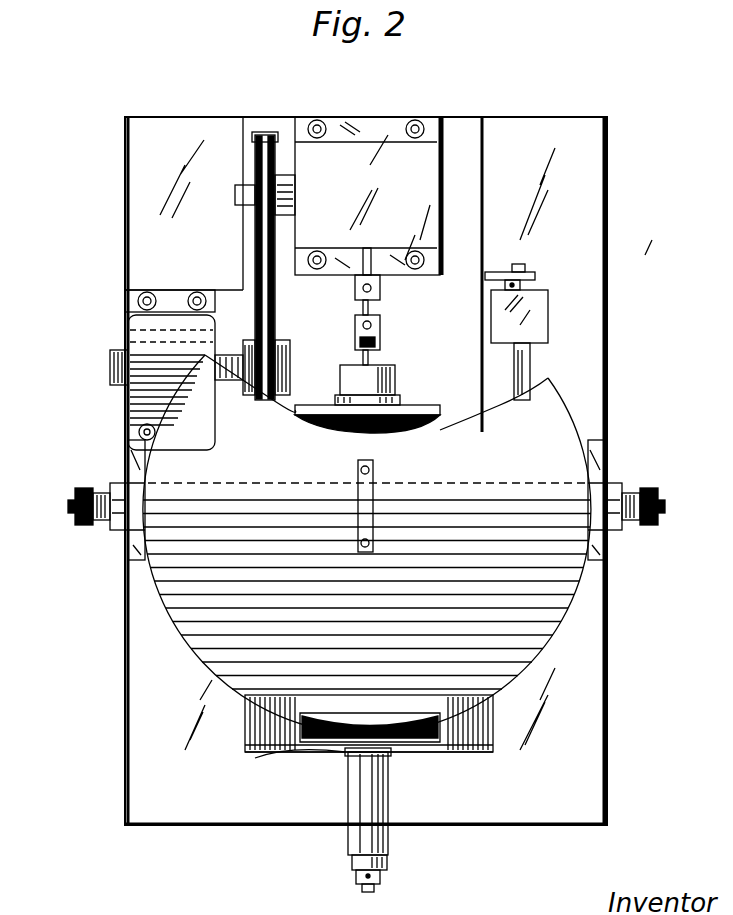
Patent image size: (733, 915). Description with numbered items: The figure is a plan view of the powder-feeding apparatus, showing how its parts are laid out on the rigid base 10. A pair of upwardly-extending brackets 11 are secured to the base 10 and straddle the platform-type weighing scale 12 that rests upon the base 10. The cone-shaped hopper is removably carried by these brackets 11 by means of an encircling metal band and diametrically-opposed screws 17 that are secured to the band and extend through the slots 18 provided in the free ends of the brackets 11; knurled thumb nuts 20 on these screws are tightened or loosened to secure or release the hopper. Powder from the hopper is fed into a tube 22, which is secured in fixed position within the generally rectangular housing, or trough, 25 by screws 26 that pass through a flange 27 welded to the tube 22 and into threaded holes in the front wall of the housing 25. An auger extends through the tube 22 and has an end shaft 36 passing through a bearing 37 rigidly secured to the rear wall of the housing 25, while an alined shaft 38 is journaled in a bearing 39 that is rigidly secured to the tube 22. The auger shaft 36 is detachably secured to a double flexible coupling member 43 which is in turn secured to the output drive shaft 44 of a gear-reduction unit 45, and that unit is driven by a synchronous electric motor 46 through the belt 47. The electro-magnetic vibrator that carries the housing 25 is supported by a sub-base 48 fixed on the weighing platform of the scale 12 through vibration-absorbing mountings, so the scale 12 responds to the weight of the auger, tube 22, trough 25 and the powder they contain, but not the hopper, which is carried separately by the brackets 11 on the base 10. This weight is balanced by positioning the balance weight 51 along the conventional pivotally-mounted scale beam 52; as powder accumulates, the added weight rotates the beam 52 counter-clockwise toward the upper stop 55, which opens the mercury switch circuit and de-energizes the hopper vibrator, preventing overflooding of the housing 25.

The rigid base 10 is at (130, 724).
The brackets 11 is at (122, 530).
The platform-type weighing scale 12 is at (265, 758).
The screws 17 is at (68, 508).
The slots 18 is at (120, 485).
The knurled thumb nuts 20 is at (90, 490).
The tube 22 is at (348, 777).
The housing (trough) 25 is at (442, 405).
The screws 26 is at (388, 758).
The flange 27 is at (268, 762).
The auger end shaft 36 is at (380, 362).
The bearing 37 is at (400, 398).
The alined shaft 38 is at (360, 888).
The bearing 39 is at (352, 862).
The double flexible coupling member 43 is at (357, 320).
The output drive shaft 44 is at (378, 262).
The gear-reduction unit 45 is at (390, 150).
The synchronous electric motor 46 is at (138, 332).
The belt 47 is at (262, 268).
The sub-base 48 is at (245, 300).
The balance weight 51 is at (548, 330).
The scale beam 52 is at (528, 378).
The upper stop 55 is at (530, 275).